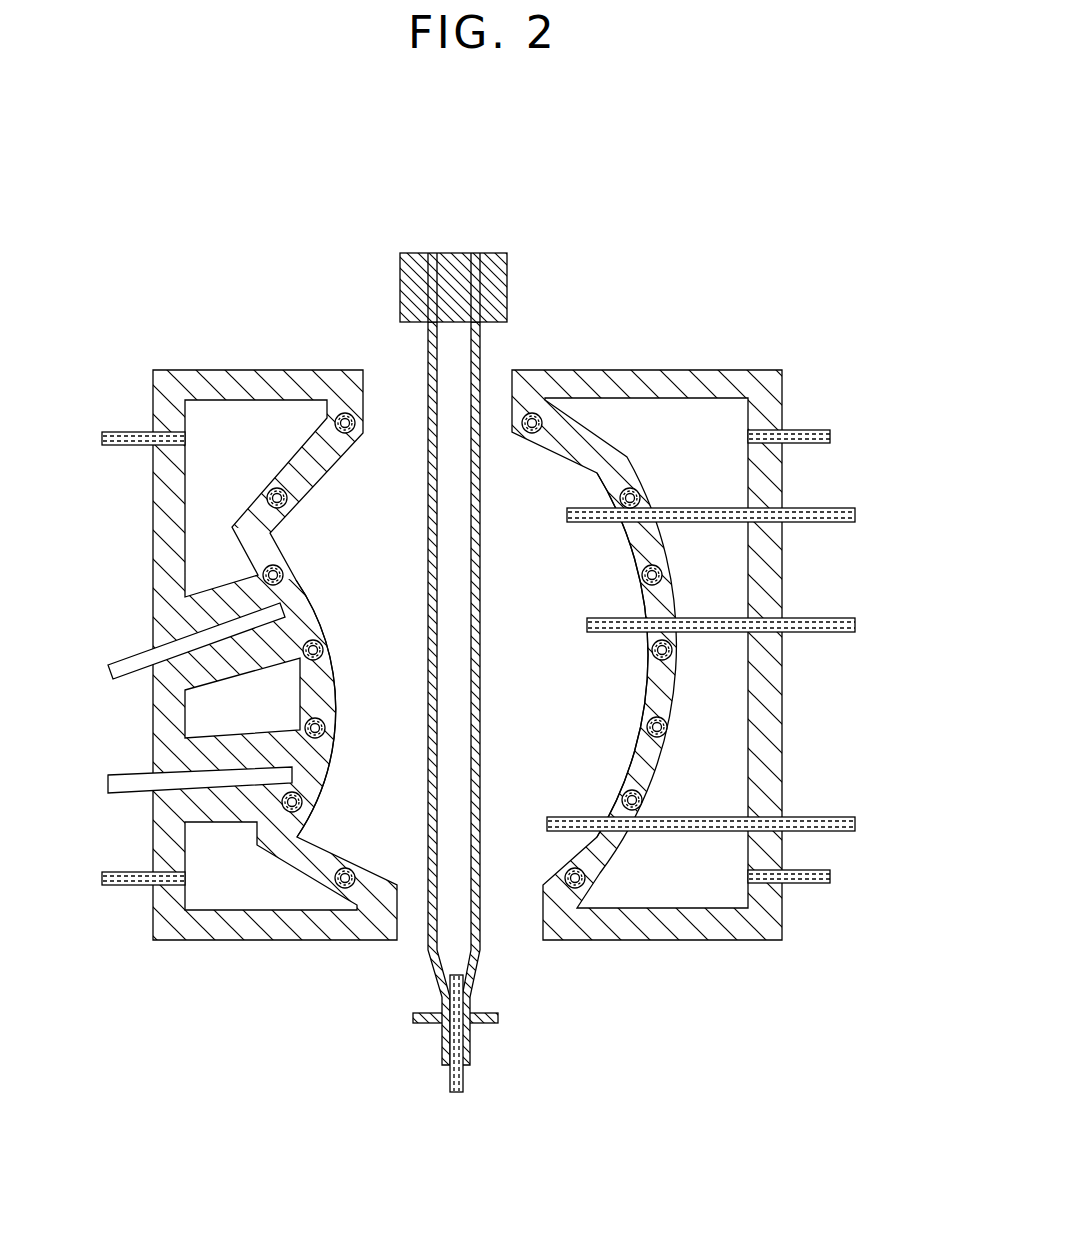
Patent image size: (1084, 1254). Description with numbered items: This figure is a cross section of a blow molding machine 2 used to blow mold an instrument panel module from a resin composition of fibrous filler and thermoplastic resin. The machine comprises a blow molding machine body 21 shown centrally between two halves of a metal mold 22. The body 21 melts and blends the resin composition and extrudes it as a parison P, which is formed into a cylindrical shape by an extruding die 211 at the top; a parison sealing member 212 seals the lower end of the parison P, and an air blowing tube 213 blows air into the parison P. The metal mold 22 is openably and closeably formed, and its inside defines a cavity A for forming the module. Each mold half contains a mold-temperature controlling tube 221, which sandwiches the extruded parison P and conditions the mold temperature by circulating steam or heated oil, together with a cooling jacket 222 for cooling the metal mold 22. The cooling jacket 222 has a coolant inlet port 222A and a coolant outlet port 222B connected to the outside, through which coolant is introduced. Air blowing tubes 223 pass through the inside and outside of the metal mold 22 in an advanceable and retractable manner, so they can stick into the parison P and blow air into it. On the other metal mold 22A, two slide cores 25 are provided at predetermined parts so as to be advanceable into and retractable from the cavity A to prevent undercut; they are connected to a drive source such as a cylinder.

The blow molding machine 2 is at (661, 249).
The blow molding machine body 21 is at (498, 606).
The extruding die 211 is at (490, 285).
The parison sealing member 212 is at (500, 1020).
The air blowing tube 213 is at (465, 1085).
The parison P is at (481, 341).
The metal mold 22 is at (724, 378).
The other metal mold 22A is at (225, 378).
The mold-temperature controlling tube 221 is at (290, 498).
The cooling jacket 222 is at (200, 495).
The coolant inlet port 222A is at (120, 432).
The coolant outlet port 222B is at (805, 430).
The air blowing tubes 223 is at (812, 524).
The slide cores 25 is at (116, 670).
The cavity A is at (335, 740).